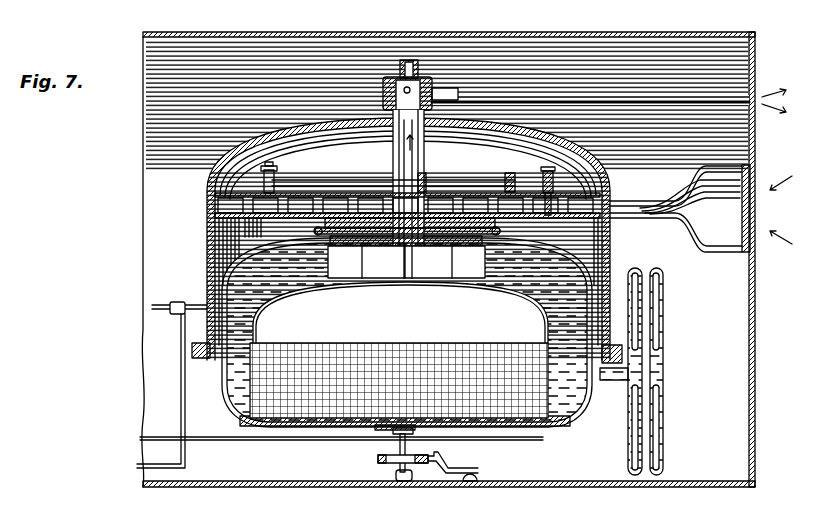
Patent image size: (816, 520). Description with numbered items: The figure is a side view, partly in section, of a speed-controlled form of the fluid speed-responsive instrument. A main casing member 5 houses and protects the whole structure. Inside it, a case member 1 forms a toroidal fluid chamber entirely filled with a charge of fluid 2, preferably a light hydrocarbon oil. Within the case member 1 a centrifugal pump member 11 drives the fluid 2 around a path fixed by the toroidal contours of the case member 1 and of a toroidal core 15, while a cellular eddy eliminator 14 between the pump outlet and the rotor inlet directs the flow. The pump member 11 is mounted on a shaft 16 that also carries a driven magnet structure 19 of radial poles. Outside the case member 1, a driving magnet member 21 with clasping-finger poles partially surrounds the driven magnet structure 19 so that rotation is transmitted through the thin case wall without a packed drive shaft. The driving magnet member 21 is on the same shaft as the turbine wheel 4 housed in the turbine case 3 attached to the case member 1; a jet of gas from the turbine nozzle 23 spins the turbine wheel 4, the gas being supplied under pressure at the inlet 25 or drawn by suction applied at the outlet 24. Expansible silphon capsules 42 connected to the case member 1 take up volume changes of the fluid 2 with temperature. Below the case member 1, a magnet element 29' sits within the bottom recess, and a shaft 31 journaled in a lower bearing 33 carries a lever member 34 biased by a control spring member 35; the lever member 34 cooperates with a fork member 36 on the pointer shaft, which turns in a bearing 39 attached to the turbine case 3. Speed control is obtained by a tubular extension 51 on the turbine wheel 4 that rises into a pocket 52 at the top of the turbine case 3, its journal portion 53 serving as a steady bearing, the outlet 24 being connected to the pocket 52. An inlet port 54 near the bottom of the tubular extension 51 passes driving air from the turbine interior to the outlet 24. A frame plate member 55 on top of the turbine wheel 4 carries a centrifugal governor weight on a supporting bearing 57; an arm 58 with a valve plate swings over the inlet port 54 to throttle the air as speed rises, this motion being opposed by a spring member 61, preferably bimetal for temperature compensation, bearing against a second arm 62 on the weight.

The case member 1 is at (428, 332).
The fluid 2 is at (555, 282).
The turbine case 3 is at (255, 130).
The turbine wheel 4 is at (533, 220).
The main casing member 5 is at (237, 32).
The centrifugal pump member 11 is at (440, 262).
The eddy eliminator 14 is at (277, 398).
The toroidal core 15 is at (400, 312).
The shaft 16 is at (406, 265).
The driven magnet structure 19 is at (385, 255).
The driving magnet member 21 is at (318, 229).
The turbine nozzle 23 is at (640, 203).
The outlet 24 is at (557, 97).
The inlet 25 is at (708, 166).
The nut 29' is at (370, 448).
The shaft 31 is at (408, 481).
The lower bearing 33 is at (402, 473).
The lever member 34 is at (480, 441).
The control spring member 35 is at (378, 461).
The fork member 36 is at (181, 378).
The bearing 39 is at (165, 303).
The silphon capsules 42 is at (664, 346).
The tubular extension 51 is at (393, 147).
The pocket 52 is at (383, 93).
The journal portion 53 is at (420, 72).
The inlet port 54 is at (410, 175).
The frame plate member 55 is at (247, 222).
The supporting bearing 57 is at (553, 185).
The arm 58 is at (470, 180).
The spring member 61 is at (302, 176).
The arm 62 is at (515, 178).